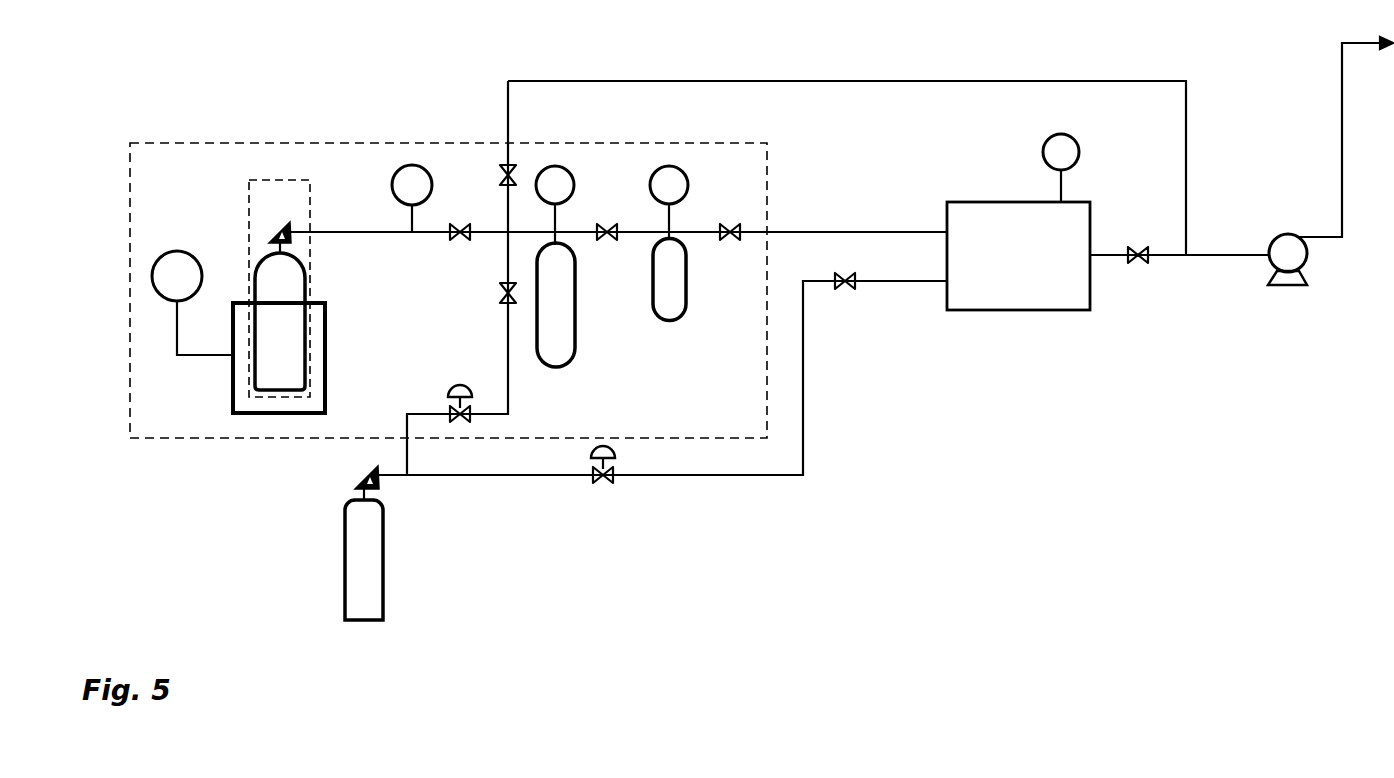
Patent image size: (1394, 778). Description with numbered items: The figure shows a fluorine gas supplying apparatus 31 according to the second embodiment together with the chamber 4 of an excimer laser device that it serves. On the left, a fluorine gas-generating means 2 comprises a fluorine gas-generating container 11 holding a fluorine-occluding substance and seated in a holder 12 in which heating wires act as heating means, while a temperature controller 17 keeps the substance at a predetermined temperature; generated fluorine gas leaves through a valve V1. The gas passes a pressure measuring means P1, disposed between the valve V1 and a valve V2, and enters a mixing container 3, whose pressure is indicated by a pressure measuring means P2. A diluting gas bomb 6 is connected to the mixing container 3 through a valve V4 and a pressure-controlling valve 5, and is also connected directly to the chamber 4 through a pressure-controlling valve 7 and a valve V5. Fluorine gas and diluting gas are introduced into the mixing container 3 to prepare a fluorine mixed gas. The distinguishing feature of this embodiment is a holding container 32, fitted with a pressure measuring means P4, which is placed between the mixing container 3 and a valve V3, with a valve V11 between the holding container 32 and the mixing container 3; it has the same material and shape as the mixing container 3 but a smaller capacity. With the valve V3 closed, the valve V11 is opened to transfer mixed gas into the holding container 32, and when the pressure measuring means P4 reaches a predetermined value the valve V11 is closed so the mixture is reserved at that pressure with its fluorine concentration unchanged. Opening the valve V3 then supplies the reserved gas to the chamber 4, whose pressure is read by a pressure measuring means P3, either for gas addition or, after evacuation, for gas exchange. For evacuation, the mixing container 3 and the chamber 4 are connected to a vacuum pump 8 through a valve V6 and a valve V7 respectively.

The fluorine gas supplying apparatus 31 is at (383, 143).
The fluorine gas-generating means 2 is at (249, 225).
The valve V1 is at (278, 224).
The temperature controller 17 is at (165, 254).
The fluorine gas-generating container 11 is at (305, 320).
The holder 12 is at (325, 393).
The pressure measuring means P1 is at (394, 186).
The valve V2 is at (459, 224).
The valve V6 is at (503, 168).
The valve V4 is at (500, 294).
The pressure measuring means P2 is at (553, 167).
The mixing container 3 is at (575, 350).
The valve V11 is at (607, 224).
The pressure measuring means P4 is at (670, 166).
The holding container 32 is at (686, 290).
The valve V3 is at (730, 224).
The pressure-controlling valve 5 is at (455, 386).
The pressure-controlling valve 7 is at (600, 486).
The diluting gas bomb 6 is at (383, 548).
The valve V5 is at (845, 292).
The chamber 4 is at (1030, 311).
The pressure measuring means P3 is at (1050, 139).
The valve V7 is at (1140, 266).
The vacuum pump 8 is at (1307, 284).